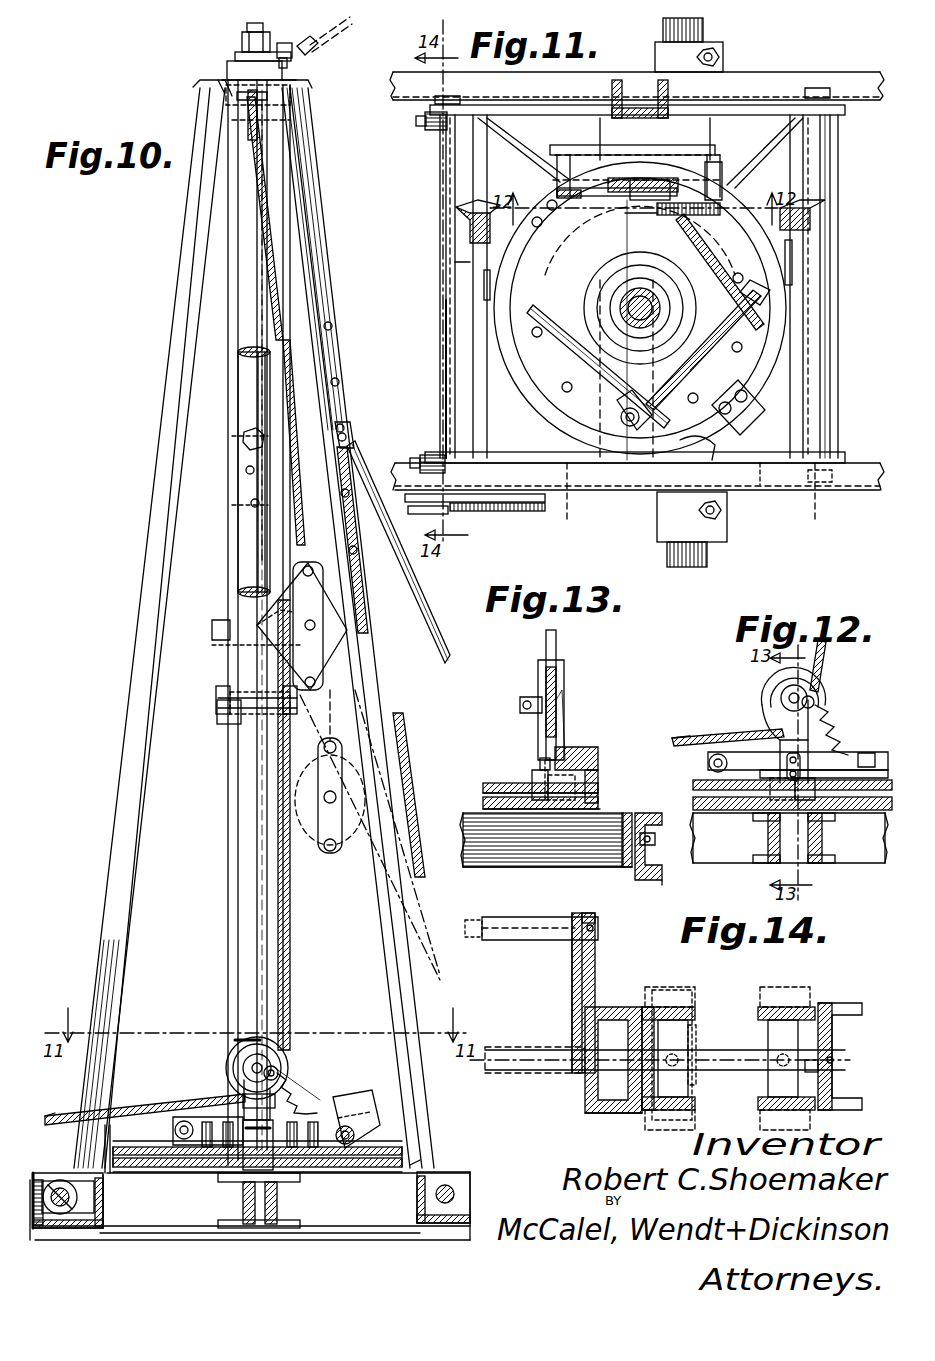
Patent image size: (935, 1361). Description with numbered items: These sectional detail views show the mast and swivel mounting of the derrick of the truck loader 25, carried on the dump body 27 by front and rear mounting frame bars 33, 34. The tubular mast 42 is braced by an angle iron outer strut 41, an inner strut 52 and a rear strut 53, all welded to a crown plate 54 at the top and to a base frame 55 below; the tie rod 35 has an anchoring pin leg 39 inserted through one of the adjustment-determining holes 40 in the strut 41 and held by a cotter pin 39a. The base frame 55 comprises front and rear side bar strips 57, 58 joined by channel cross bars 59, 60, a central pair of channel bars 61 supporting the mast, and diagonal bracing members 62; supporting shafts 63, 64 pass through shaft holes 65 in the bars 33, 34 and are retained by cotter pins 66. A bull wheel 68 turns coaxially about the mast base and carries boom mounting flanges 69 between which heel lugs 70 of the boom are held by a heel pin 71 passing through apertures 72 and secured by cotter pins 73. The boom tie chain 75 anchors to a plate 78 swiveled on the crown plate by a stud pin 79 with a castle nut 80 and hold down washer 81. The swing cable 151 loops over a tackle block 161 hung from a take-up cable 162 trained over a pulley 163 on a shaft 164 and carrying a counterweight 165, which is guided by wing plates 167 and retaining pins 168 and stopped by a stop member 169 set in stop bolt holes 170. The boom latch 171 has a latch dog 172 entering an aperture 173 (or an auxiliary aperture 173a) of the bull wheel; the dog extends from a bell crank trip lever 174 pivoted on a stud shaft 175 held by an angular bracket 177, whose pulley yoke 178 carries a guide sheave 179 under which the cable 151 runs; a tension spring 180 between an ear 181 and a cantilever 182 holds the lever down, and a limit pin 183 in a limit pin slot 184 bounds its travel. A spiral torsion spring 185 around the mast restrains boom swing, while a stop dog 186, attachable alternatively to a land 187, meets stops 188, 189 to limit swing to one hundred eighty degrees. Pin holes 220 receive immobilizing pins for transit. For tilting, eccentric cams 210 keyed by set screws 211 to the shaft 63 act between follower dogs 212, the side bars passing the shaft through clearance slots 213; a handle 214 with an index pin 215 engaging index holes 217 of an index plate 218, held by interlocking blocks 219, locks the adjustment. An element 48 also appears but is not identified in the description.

In FIG. 10, the truck loader 25 is at (135, 632).
In FIG. 11, the dump body 27 is at (705, 35).
In FIG. 10, the front mounting frame bar 33 is at (420, 1237).
In FIG. 11, the front mounting frame bar 33 is at (860, 65).
In FIG. 14, the front mounting frame bar 33 is at (840, 1100).
In FIG. 11, the rear mounting frame bar 34 is at (840, 470).
In FIG. 14, the rear mounting frame bar 34 is at (600, 1110).
In FIG. 10, the tie rod 35 is at (408, 578).
In FIG. 10, the anchoring pin leg 39 is at (348, 437).
In FIG. 10, the cotter pin 39a is at (350, 425).
In FIG. 10, the adjustment-determining holes 40 is at (332, 322).
In FIG. 10, the angle iron outer strut 41 is at (330, 290).
In FIG. 11, the angle iron outer strut 41 is at (805, 210).
In FIG. 10, the mast 42 is at (245, 915).
In FIG. 11, the mast 42 is at (630, 300).
In FIG. 11, the block 48 is at (715, 535).
In FIG. 10, the inner strut 52 is at (122, 858).
In FIG. 11, the inner strut 52 is at (458, 212).
In FIG. 10, the rear strut 53 is at (232, 890).
In FIG. 11, the rear strut 53 is at (618, 82).
In FIG. 10, the crown plate 54 is at (228, 70).
In FIG. 10, the base frame 55 is at (110, 1225).
In FIG. 11, the base frame 55 is at (805, 140).
In FIG. 10, the front side bar strip 57 is at (325, 1225).
In FIG. 11, the front side bar strip 57 is at (755, 105).
In FIG. 13, the front side bar strip 57 is at (640, 815).
In FIG. 12, the front side bar strip 57 is at (700, 830).
In FIG. 14, the front side bar strip 57 is at (775, 1005).
In FIG. 11, the rear side bar strip 58 is at (760, 470).
In FIG. 14, the rear side bar strip 58 is at (650, 985).
In FIG. 10, the channel cross bar 59 is at (105, 1205).
In FIG. 11, the channel cross bar 59 is at (460, 238).
In FIG. 10, the channel cross bar 60 is at (415, 1207).
In FIG. 11, the channel cross bar 60 is at (808, 153).
In FIG. 10, the channel bars 61 is at (240, 1230).
In FIG. 11, the channel bars 61 is at (608, 120).
In FIG. 13, the channel bars 61 is at (600, 850).
In FIG. 12, the channel bars 61 is at (770, 863).
In FIG. 11, the diagonal bracing members 62 is at (768, 125).
In FIG. 10, the supporting shaft 63 is at (75, 1197).
In FIG. 11, the supporting shaft 63 is at (440, 282).
In FIG. 13, the supporting shaft 63 is at (650, 835).
In FIG. 14, the supporting shaft 63 is at (710, 1052).
In FIG. 10, the supporting shaft 64 is at (450, 1185).
In FIG. 11, the supporting shaft 64 is at (830, 345).
In FIG. 11, the shaft holes 65 is at (528, 108).
In FIG. 14, the shaft holes 65 is at (830, 1010).
In FIG. 11, the cotter pins 66 is at (815, 80).
In FIG. 13, the cotter pins 66 is at (652, 850).
In FIG. 14, the cotter pins 66 is at (835, 1055).
In FIG. 10, the bull wheel 68 is at (395, 1165).
In FIG. 11, the bull wheel 68 is at (775, 345).
In FIG. 13, the bull wheel 68 is at (500, 783).
In FIG. 12, the bull wheel 68 is at (700, 790).
In FIG. 10, the boom mounting flanges 69 is at (360, 1100).
In FIG. 11, the boom mounting flanges 69 is at (660, 222).
In FIG. 10, the heel lugs 70 is at (340, 1098).
In FIG. 11, the heel lugs 70 is at (758, 330).
In FIG. 10, the heel pin 71 is at (358, 1125).
In FIG. 11, the heel pin 71 is at (712, 340).
In FIG. 11, the apertures 72 is at (655, 212).
In FIG. 11, the cotter pins 73 is at (760, 295).
In FIG. 10, the boom tie chain 75 is at (335, 38).
In FIG. 10, the horizontal plate 78 is at (268, 52).
In FIG. 10, the stud bolt 79 is at (247, 28).
In FIG. 10, the castle nut 80 is at (242, 42).
In FIG. 10, the hold down washer 81 is at (236, 56).
In FIG. 10, the swing cable 151 is at (412, 818).
In FIG. 13, the swing cable 151 is at (556, 640).
In FIG. 12, the swing cable 151 is at (688, 738).
In FIG. 10, the tackle block 161 is at (340, 636).
In FIG. 10, the take-up cable 162 is at (302, 358).
In FIG. 10, the pulley 163 is at (247, 112).
In FIG. 10, the shaft 164 is at (270, 115).
In FIG. 10, the counterweight 165 is at (215, 682).
In FIG. 10, the wing plates 167 is at (222, 662).
In FIG. 10, the retaining pins 168 is at (225, 640).
In FIG. 10, the stop member 169 is at (238, 438).
In FIG. 10, the stop bolt holes 170 is at (248, 478).
In FIG. 10, the boom latch 171 is at (310, 1085).
In FIG. 11, the boom latch 171 is at (660, 190).
In FIG. 13, the boom latch 171 is at (528, 740).
In FIG. 12, the boom latch 171 is at (828, 712).
In FIG. 13, the latch dog 172 is at (555, 800).
In FIG. 12, the latch dog 172 is at (805, 815).
In FIG. 13, the aperture 173 is at (548, 790).
In FIG. 12, the aperture 173 is at (808, 805).
In FIG. 11, the auxiliary latch aperture 173a is at (790, 300).
In FIG. 10, the bell crank trip lever 174 is at (195, 1095).
In FIG. 11, the bell crank trip lever 174 is at (610, 180).
In FIG. 13, the bell crank trip lever 174 is at (585, 745).
In FIG. 12, the bell crank trip lever 174 is at (785, 745).
In FIG. 10, the stud shaft 175 is at (184, 1122).
In FIG. 11, the stud shaft 175 is at (552, 195).
In FIG. 12, the stud shaft 175 is at (710, 763).
In FIG. 10, the angular bracket 177 is at (172, 1140).
In FIG. 11, the angular bracket 177 is at (565, 160).
In FIG. 13, the angular bracket 177 is at (592, 765).
In FIG. 12, the angular bracket 177 is at (866, 755).
In FIG. 10, the pulley yoke 178 is at (290, 1020).
In FIG. 13, the pulley yoke 178 is at (565, 690).
In FIG. 12, the pulley yoke 178 is at (770, 695).
In FIG. 10, the guide sheave 179 is at (240, 1030).
In FIG. 11, the guide sheave 179 is at (657, 192).
In FIG. 13, the guide sheave 179 is at (555, 670).
In FIG. 12, the guide sheave 179 is at (790, 685).
In FIG. 10, the tension spring 180 is at (275, 1060).
In FIG. 11, the tension spring 180 is at (643, 290).
In FIG. 12, the tension spring 180 is at (815, 712).
In FIG. 10, the ear 181 is at (290, 1035).
In FIG. 13, the ear 181 is at (546, 690).
In FIG. 12, the ear 181 is at (812, 680).
In FIG. 11, the cantilever 182 is at (735, 195).
In FIG. 12, the cantilever 182 is at (862, 750).
In FIG. 13, the limit pin 183 is at (536, 756).
In FIG. 12, the limit pin 183 is at (800, 765).
In FIG. 12, the limit pin slot 184 is at (790, 753).
In FIG. 10, the spiral torsion spring 185 is at (300, 1145).
In FIG. 11, the spiral torsion spring 185 is at (620, 305).
In FIG. 11, the stop dog 186 is at (765, 405).
In FIG. 11, the land 187 is at (470, 285).
In FIG. 10, the stop 188 is at (95, 1108).
In FIG. 11, the stop 188 is at (455, 262).
In FIG. 10, the stop 189 is at (428, 1150).
In FIG. 11, the stop 189 is at (790, 258).
In FIG. 10, the eccentric cams 210 is at (72, 1212).
In FIG. 11, the eccentric cams 210 is at (450, 122).
In FIG. 14, the eccentric cams 210 is at (688, 1025).
In FIG. 10, the set screws 211 is at (55, 1190).
In FIG. 14, the set screws 211 is at (675, 990).
In FIG. 10, the follower ears 212 is at (78, 1175).
In FIG. 11, the follower ears 212 is at (455, 128).
In FIG. 14, the follower ears 212 is at (690, 1005).
In FIG. 14, the clearance slots 213 is at (635, 1005).
In FIG. 11, the handle 214 is at (462, 525).
In FIG. 13, the handle 214 is at (547, 889).
In FIG. 14, the handle 214 is at (515, 920).
In FIG. 13, the index pin 215 is at (643, 896).
In FIG. 14, the index pin 215 is at (600, 925).
In FIG. 14, the index holes 217 is at (598, 945).
In FIG. 11, the index plate 218 is at (525, 510).
In FIG. 14, the index plate 218 is at (575, 962).
In FIG. 14, the interlocking blocks 219 is at (590, 1085).
In FIG. 11, the pin holes 220 is at (742, 350).